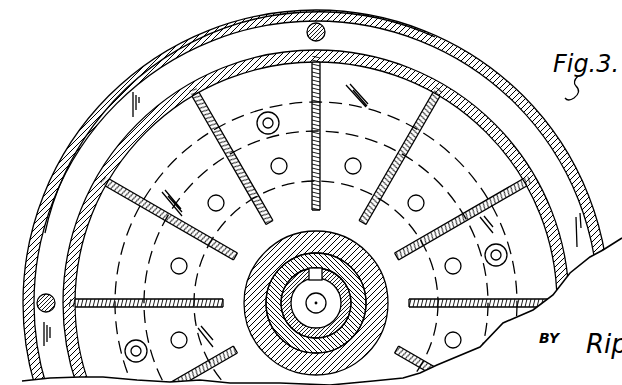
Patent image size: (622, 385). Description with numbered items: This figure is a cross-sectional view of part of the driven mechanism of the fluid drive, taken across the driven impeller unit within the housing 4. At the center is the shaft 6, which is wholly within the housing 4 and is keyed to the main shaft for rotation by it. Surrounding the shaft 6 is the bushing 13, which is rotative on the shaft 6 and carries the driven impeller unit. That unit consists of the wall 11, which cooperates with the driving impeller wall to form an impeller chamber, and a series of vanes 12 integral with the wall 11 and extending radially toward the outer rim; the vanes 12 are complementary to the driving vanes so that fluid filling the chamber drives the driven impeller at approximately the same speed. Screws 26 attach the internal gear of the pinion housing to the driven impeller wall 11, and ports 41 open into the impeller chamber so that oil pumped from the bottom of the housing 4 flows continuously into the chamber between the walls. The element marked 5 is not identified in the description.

The housing 4 is at (514, 88).
The wall 11 is at (510, 143).
The rim holes 5 is at (306, 32).
The vanes 12 is at (321, 128).
The ports 41 is at (271, 164).
The screws 26 is at (266, 112).
The bushing 13 is at (356, 292).
The shaft 6 is at (349, 316).